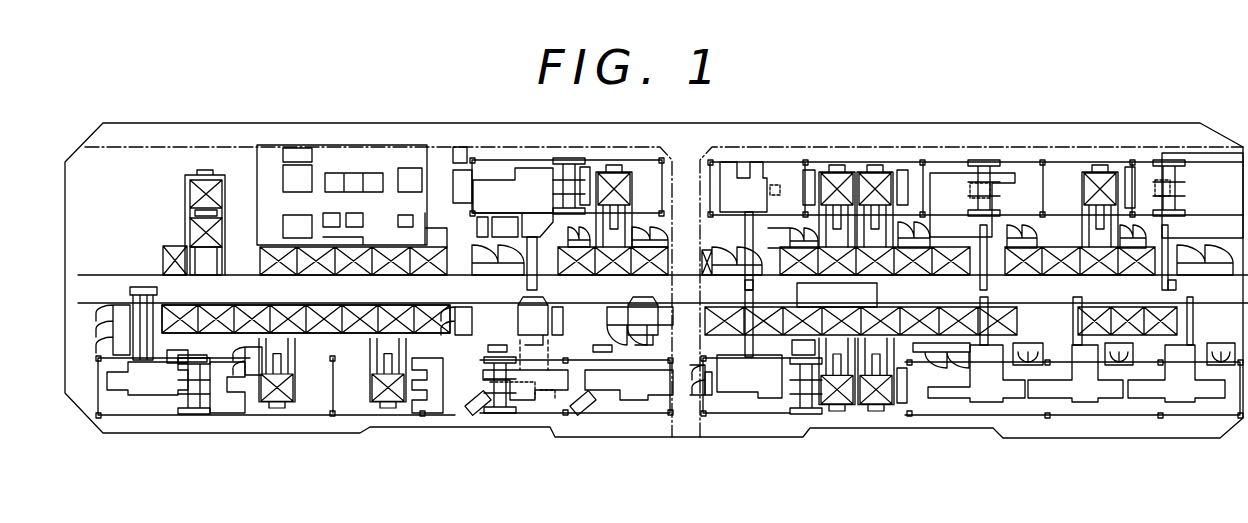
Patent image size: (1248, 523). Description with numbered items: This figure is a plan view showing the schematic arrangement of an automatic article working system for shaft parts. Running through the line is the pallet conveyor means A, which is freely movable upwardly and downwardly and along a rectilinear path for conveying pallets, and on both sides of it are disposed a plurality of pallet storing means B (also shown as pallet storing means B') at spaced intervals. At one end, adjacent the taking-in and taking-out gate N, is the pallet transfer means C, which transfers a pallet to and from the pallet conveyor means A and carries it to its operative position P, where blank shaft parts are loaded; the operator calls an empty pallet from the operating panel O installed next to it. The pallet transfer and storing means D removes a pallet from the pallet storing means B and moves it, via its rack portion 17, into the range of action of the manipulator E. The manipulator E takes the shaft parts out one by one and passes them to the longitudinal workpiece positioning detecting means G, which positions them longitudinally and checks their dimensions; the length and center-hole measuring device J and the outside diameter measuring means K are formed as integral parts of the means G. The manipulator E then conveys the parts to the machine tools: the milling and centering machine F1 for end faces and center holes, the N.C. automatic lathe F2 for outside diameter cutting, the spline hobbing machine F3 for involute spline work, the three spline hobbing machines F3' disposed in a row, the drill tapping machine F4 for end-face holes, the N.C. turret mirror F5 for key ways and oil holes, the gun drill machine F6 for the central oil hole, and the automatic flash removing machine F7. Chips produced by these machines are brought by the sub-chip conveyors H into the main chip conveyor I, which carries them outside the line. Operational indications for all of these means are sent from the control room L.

The pallet conveyor means A is at (797, 292).
The pallet storing means B is at (718, 286).
The cross-braced beam B' is at (557, 315).
The pallet transfer means C is at (190, 192).
The pallet transfer and storing means D is at (614, 175).
The manipulator E is at (568, 158).
The milling and centering machine F1 is at (122, 380).
The N.C. automatic lathe F2 is at (527, 400).
The spline hobbing machine F3 is at (743, 383).
The spline hobbing machines F3' is at (1076, 403).
The drill tapping machine F4 is at (527, 172).
The N.C. turret mirror F5 is at (758, 175).
The gun drill machine F6 is at (1012, 186).
The automatic flash removing machine F7 is at (1213, 170).
The longitudinal workpiece positioning detecting means G is at (590, 160).
The sub-chip conveyor H is at (135, 305).
The main chip conveyor I is at (504, 290).
The device for measuring overall length and center hole depth J is at (222, 415).
The outside diameter measuring means K is at (440, 430).
The control room L is at (410, 162).
The taking-in and taking-out gate N is at (208, 272).
The taking-in and taking-out operating panel O is at (163, 257).
The operative position P is at (190, 230).
The rack portion 17 is at (285, 312).